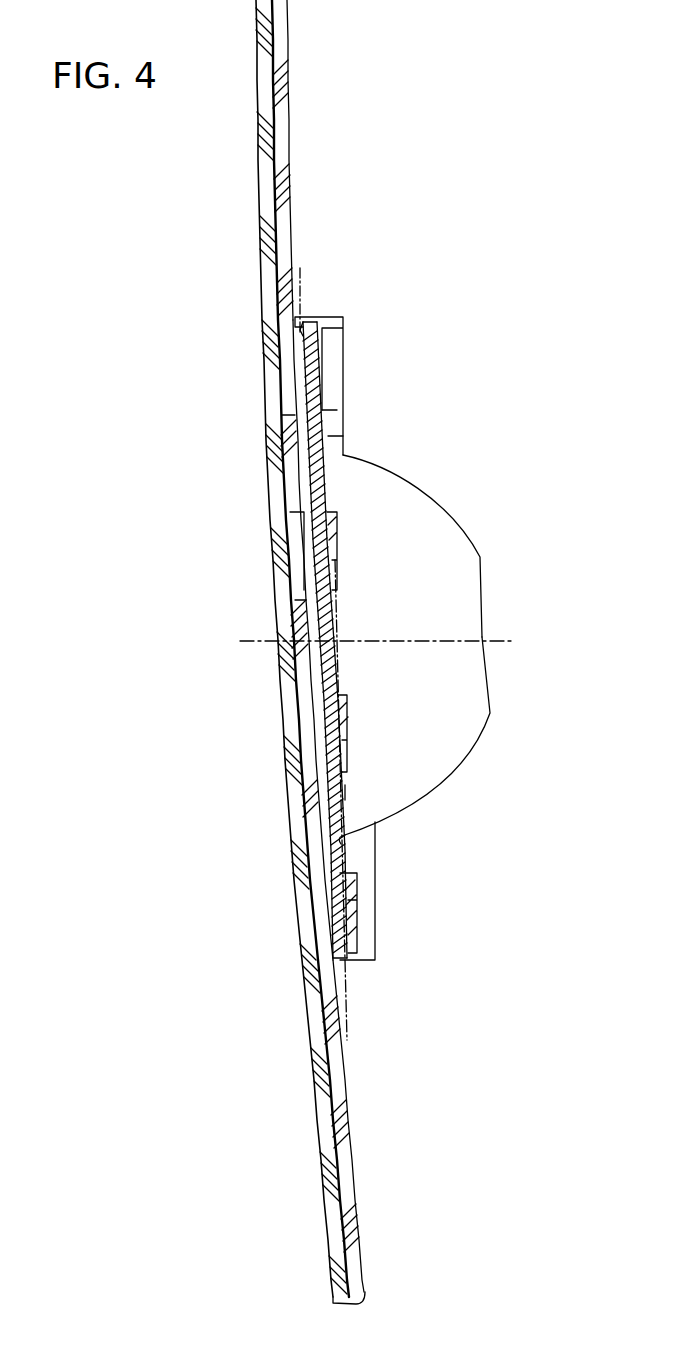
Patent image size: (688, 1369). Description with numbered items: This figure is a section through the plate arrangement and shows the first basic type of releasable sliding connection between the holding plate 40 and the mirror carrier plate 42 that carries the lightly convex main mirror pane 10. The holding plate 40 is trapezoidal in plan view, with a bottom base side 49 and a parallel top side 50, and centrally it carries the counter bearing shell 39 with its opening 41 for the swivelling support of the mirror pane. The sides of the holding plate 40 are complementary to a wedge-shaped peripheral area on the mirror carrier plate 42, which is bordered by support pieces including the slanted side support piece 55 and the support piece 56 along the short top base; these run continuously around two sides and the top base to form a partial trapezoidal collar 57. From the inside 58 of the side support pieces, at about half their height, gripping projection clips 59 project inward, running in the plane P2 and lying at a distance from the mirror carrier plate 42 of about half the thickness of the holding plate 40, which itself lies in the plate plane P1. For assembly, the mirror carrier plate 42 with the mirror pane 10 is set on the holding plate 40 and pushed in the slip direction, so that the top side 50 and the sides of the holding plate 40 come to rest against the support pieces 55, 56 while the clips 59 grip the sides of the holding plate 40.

The mirror pane 10 is at (275, 446).
The counter bearing shell 39 is at (428, 512).
The holding plate 40 is at (322, 672).
The opening 41 is at (487, 588).
The mirror carrier plate 42 is at (328, 1021).
The bottom base side 49 is at (341, 958).
The top side 50 is at (302, 322).
The support piece 55 is at (336, 416).
The support piece 56 is at (312, 320).
The partial trapezoidal collar 57 is at (350, 342).
The inside 58 is at (333, 436).
The gripping projection clips 59 is at (320, 375).
The plate plane P1 is at (348, 1028).
The plane P2 is at (345, 792).